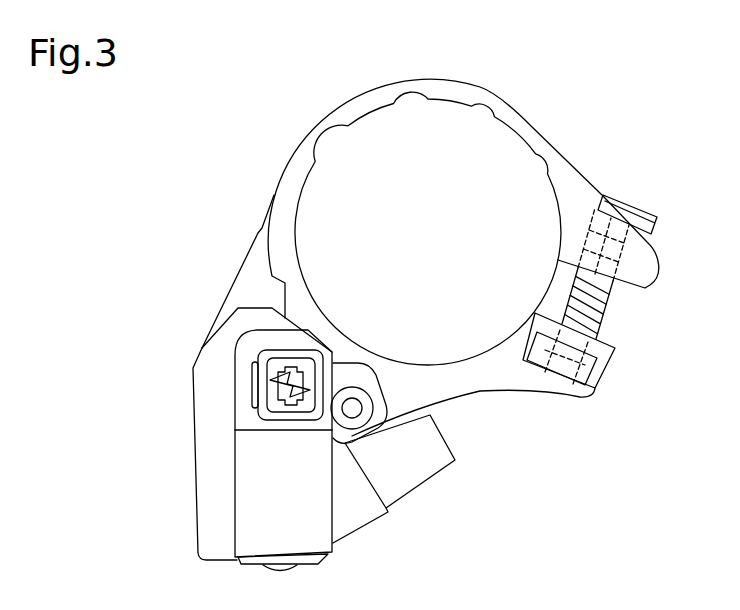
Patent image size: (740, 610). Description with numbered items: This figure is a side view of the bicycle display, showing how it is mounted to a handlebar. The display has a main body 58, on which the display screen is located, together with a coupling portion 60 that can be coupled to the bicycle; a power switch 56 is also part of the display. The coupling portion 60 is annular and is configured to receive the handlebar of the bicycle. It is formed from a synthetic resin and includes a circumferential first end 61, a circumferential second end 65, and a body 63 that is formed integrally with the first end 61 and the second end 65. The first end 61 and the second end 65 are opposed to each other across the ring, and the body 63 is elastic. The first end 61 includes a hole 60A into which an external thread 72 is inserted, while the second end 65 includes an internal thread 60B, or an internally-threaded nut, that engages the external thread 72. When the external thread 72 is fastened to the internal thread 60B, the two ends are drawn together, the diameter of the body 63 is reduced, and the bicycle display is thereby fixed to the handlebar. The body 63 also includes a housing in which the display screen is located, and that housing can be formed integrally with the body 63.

The power switch 56 is at (289, 573).
The main body 58 is at (193, 489).
The coupling portion 60 is at (451, 81).
The hole 60A is at (642, 269).
The internal thread 60B is at (583, 378).
The circumferential first end 61 is at (647, 282).
The body 63 is at (547, 133).
The circumferential second end 65 is at (615, 350).
The external thread 72 is at (637, 204).